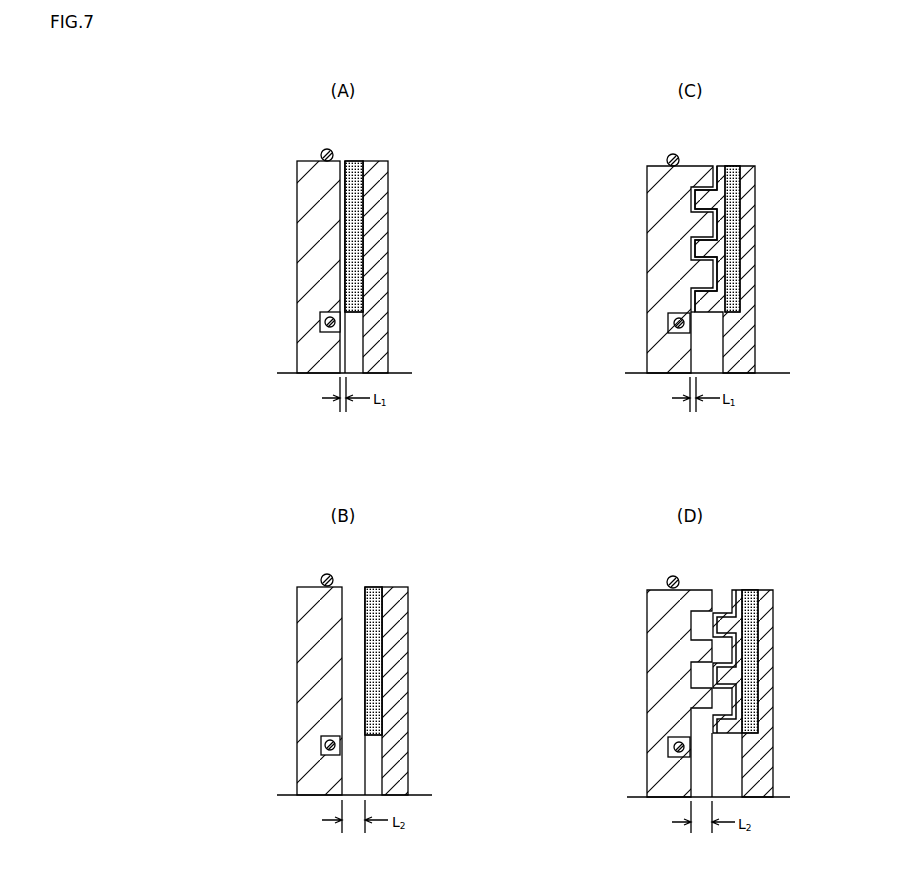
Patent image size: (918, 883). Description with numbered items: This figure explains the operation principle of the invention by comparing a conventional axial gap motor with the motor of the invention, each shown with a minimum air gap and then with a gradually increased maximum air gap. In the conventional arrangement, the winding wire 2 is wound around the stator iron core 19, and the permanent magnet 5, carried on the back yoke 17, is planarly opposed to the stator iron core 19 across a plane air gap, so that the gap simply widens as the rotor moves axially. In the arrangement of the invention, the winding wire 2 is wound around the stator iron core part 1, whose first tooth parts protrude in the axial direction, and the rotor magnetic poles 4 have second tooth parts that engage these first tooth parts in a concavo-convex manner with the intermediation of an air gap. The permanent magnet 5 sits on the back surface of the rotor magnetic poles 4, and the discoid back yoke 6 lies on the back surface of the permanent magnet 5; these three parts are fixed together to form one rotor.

The stator iron core part 1 is at (650, 207).
The winding wire 2 is at (322, 152).
The rotor magnetic poles 4 is at (716, 166).
The permanent magnet 5 is at (355, 164).
The back yoke 6 is at (748, 212).
The back yoke 17 is at (382, 197).
The stator iron core 19 is at (300, 207).